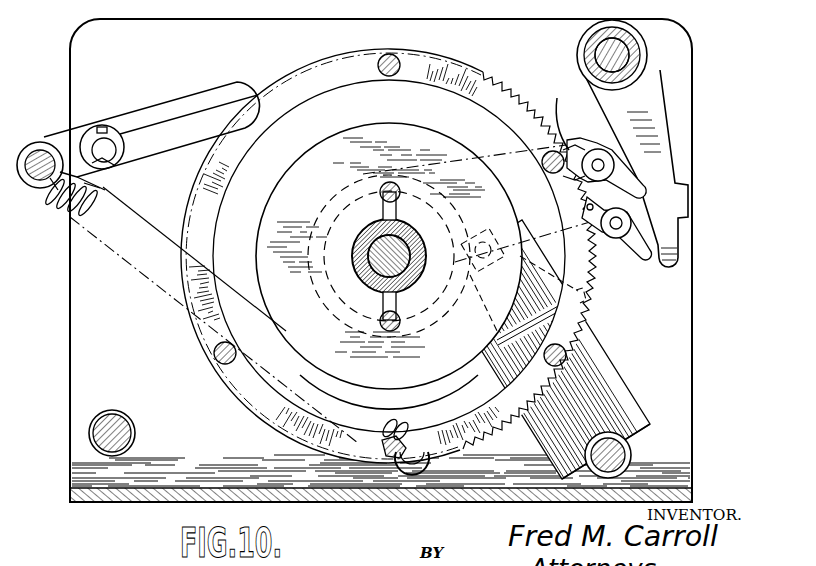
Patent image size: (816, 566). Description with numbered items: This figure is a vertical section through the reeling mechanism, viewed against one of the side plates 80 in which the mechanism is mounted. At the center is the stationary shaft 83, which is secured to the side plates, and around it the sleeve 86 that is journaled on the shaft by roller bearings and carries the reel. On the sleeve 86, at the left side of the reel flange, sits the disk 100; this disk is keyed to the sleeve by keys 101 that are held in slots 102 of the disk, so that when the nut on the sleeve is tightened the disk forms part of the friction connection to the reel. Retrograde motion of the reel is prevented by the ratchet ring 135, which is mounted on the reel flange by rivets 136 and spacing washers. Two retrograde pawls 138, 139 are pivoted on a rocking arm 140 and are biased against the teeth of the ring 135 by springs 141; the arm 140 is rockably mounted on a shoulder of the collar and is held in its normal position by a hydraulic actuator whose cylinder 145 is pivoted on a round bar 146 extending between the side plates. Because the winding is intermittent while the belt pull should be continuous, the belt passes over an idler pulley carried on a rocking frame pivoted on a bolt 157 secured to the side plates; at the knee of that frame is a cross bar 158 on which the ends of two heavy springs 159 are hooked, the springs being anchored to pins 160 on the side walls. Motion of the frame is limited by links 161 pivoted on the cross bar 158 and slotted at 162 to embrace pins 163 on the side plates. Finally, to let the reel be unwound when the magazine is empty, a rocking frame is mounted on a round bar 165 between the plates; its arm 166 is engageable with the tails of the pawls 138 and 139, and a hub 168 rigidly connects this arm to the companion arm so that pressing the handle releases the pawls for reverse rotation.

The side plate 80 is at (721, 351).
The stationary shaft 83 is at (372, 268).
The sleeve 86 is at (372, 247).
The disk 100 is at (437, 368).
The key 101 is at (398, 206).
The slot 102 is at (400, 190).
The ratchet ring 135 is at (497, 80).
The rivet 136 is at (383, 74).
The retrograde pawl 138 is at (583, 187).
The retrograde pawl 139 is at (556, 115).
The rocking arm 140 is at (498, 163).
The spring 141 is at (588, 140).
The cylinder 145 is at (600, 362).
The round bar 146 is at (614, 460).
The bolt 157 is at (135, 433).
The cross bar 158 is at (52, 147).
The spring 159 is at (62, 203).
The pin 160 is at (428, 466).
The link 161 is at (160, 153).
The slot 162 is at (195, 107).
The pin 163 is at (104, 147).
The round bar 165 is at (620, 50).
The arm 166 is at (652, 135).
The hub 168 is at (613, 86).